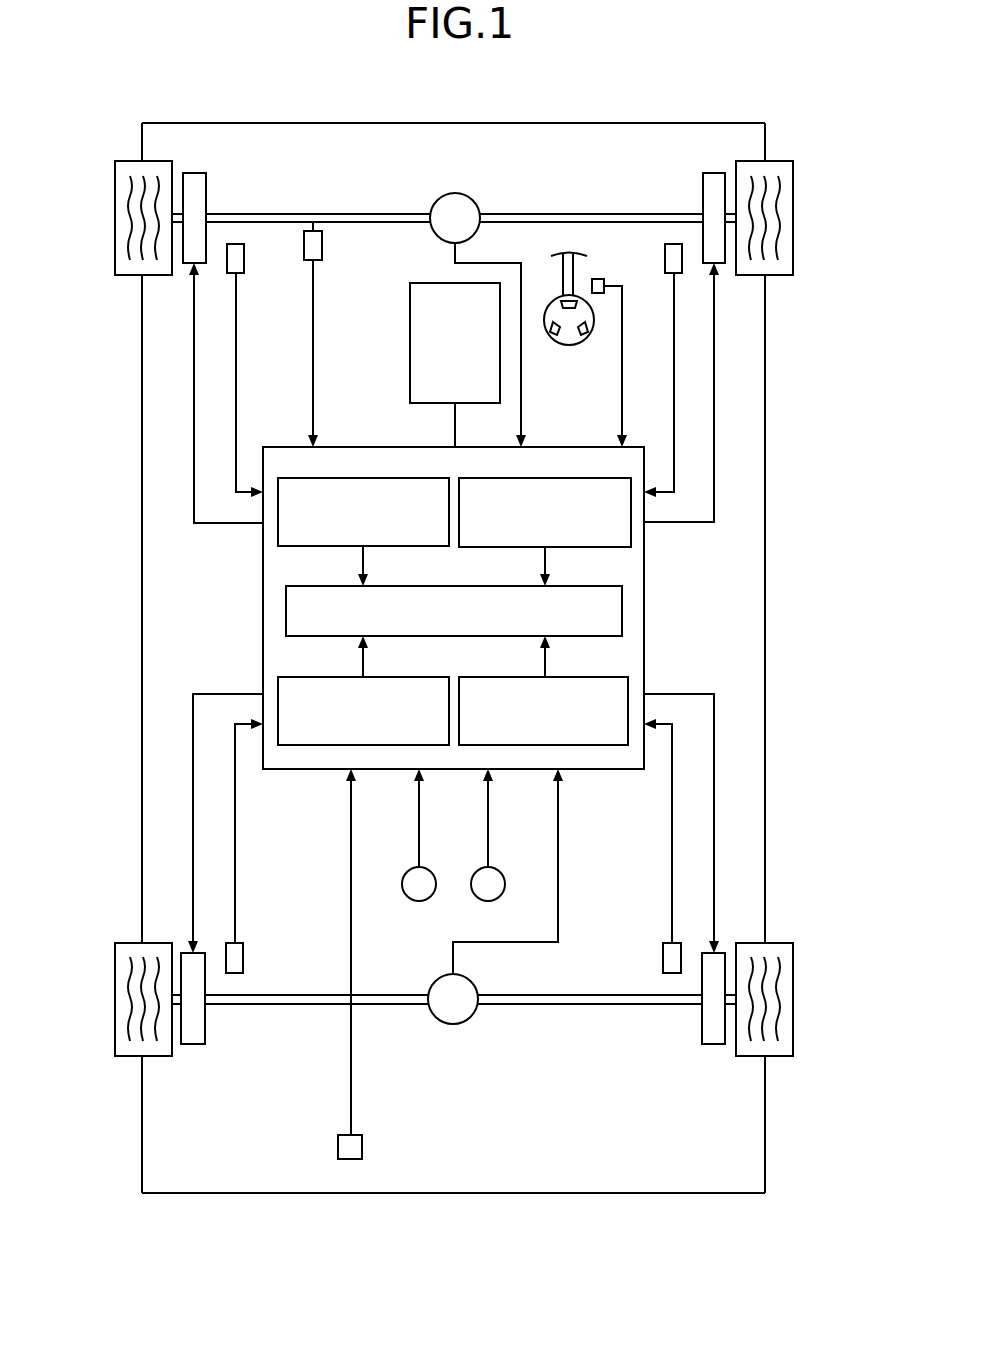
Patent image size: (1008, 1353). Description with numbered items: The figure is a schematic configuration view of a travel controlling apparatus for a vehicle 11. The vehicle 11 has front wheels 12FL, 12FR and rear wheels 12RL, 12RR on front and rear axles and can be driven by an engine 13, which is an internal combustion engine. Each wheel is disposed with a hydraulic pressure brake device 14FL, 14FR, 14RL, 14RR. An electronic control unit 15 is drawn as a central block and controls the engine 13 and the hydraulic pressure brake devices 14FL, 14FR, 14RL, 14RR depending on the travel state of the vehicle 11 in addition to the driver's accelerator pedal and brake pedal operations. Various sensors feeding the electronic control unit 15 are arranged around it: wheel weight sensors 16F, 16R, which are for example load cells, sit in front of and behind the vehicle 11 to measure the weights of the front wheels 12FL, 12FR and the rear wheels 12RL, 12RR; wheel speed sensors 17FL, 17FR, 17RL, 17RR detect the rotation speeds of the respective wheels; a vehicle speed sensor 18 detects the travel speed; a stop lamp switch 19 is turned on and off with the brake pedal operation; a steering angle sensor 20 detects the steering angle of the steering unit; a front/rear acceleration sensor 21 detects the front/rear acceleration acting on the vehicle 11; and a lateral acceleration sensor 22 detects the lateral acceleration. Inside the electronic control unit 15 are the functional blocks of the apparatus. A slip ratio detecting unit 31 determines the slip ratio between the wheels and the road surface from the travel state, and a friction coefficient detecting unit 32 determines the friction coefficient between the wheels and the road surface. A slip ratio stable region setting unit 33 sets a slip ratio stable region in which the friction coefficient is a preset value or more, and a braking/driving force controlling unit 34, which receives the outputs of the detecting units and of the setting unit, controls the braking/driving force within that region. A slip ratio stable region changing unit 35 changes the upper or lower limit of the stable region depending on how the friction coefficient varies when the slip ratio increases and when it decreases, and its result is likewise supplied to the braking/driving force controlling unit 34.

The vehicle 11 is at (780, 134).
The front wheel 12FL is at (115, 205).
The front wheel 12FR is at (793, 214).
The rear wheel 12RL is at (115, 992).
The rear wheel 12RR is at (793, 984).
The engine 13 is at (422, 290).
The hydraulic pressure brake device 14FL is at (192, 185).
The hydraulic pressure brake device 14FR is at (713, 185).
The hydraulic pressure brake device 14RL is at (193, 1044).
The hydraulic pressure brake device 14RR is at (714, 1044).
The electronic control unit 15 is at (540, 608).
The wheel weight sensor 16F is at (460, 205).
The wheel weight sensor 16R is at (453, 1024).
The wheel speed sensor 17FL is at (236, 244).
The wheel speed sensor 17FR is at (674, 244).
The wheel speed sensor 17RL is at (237, 973).
The wheel speed sensor 17RR is at (672, 973).
The vehicle speed sensor 18 is at (313, 231).
The stop lamp switch 19 is at (351, 1159).
The steering angle sensor 20 is at (598, 279).
The front/rear acceleration sensor 21 is at (418, 901).
The lateral acceleration sensor 22 is at (490, 901).
The slip ratio detecting unit 31 is at (402, 478).
The friction coefficient detecting unit 32 is at (592, 478).
The slip ratio stable region setting unit 33 is at (402, 677).
The braking/driving force controlling unit 34 is at (582, 586).
The slip ratio stable region changing unit 35 is at (583, 677).